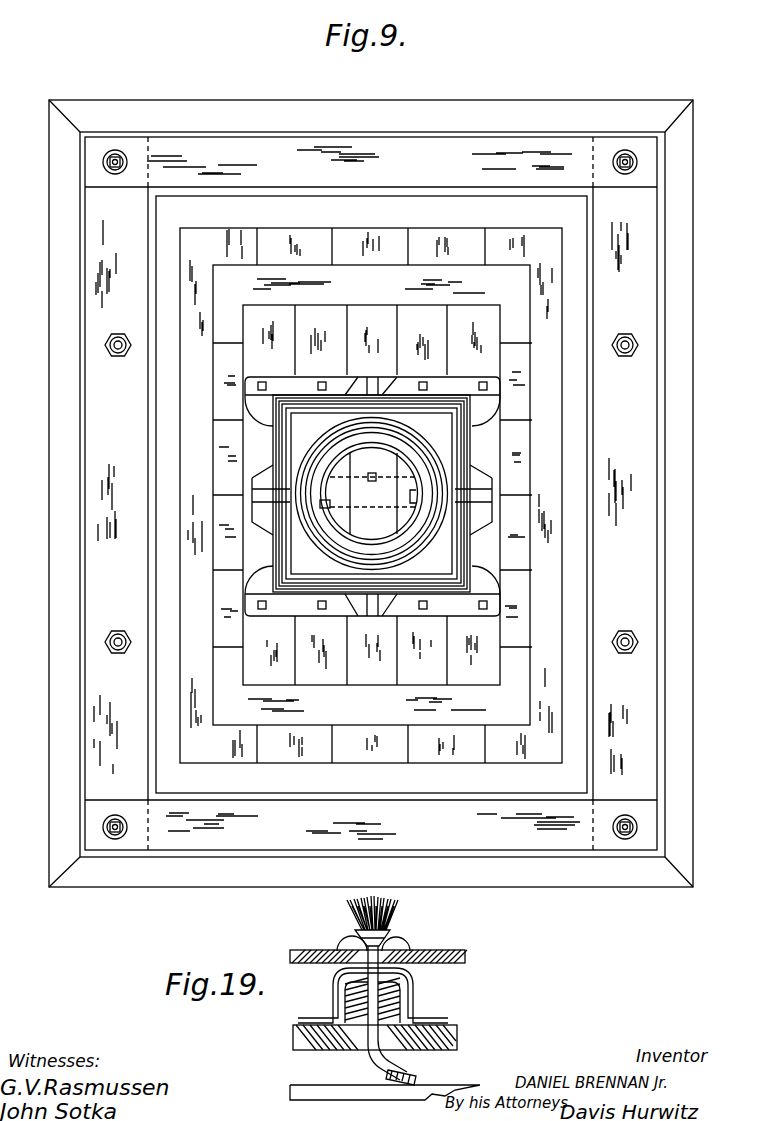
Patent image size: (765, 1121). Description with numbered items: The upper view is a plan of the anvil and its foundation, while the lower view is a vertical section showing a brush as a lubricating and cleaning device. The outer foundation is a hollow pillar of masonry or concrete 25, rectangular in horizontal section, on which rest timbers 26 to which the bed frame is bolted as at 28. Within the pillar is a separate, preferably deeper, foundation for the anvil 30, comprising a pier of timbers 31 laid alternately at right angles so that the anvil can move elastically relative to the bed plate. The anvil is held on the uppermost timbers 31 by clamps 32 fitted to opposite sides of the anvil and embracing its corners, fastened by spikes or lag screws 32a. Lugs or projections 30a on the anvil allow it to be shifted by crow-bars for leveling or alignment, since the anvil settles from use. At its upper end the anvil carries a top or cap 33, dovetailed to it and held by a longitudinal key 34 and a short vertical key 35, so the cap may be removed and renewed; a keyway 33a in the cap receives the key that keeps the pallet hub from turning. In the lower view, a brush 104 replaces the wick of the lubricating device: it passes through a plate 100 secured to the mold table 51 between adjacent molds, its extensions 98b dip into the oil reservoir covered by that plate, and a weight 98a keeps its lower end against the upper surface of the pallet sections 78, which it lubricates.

In FIG. 9, the hollow pillar of masonry or concrete 25 is at (598, 888).
In FIG. 9, the timbers 26 is at (114, 693).
In FIG. 9, the bolts 28 is at (105, 346).
In FIG. 9, the anvil 30 is at (371, 493).
In FIG. 9, the lugs or projections 30a is at (371, 378).
In FIG. 9, the pier of timbers 31 is at (371, 495).
In FIG. 9, the clamps 32 is at (443, 612).
In FIG. 9, the spikes or lag screws 32a is at (322, 381).
In FIG. 9, the anvil top or cap 33 is at (397, 470).
In FIG. 9, the keyway 33a is at (414, 497).
In FIG. 9, the longitudinal key 34 is at (326, 510).
In FIG. 9, the short vertical key 35 is at (372, 481).
In FIG. 19, the mold table 51 is at (457, 1040).
In FIG. 19, the pallet sections 78 is at (357, 1092).
In FIG. 19, the weight 98a is at (416, 1079).
In FIG. 19, the extensions 98b is at (446, 1014).
In FIG. 19, the plate 100 is at (318, 950).
In FIG. 19, the brush 104 is at (396, 918).